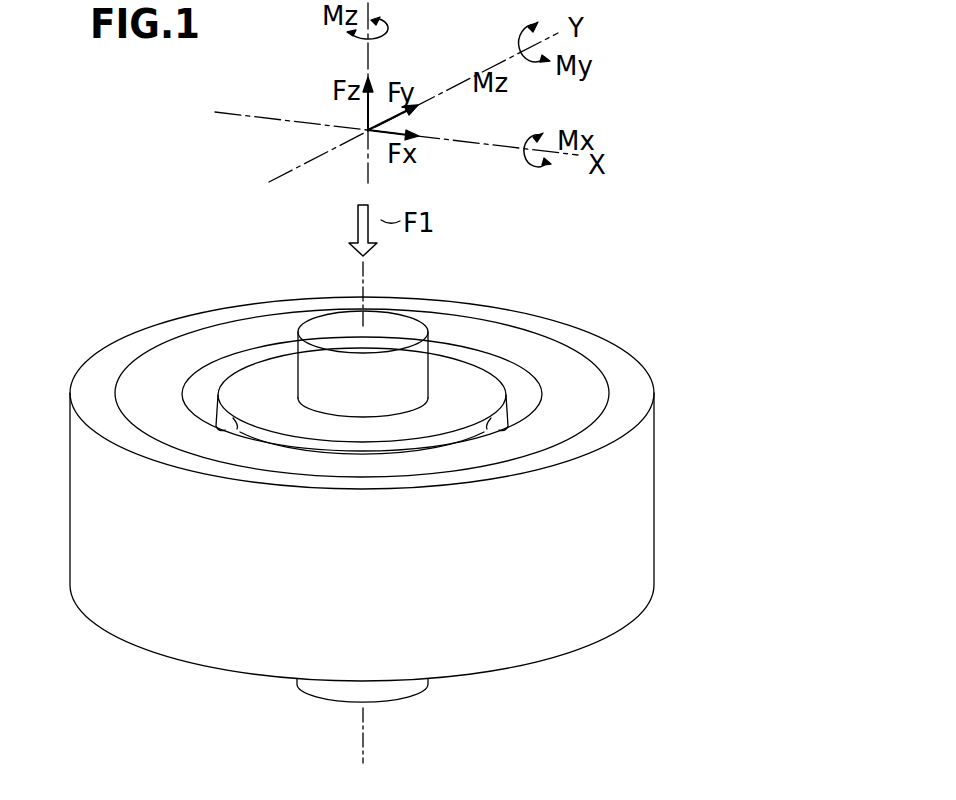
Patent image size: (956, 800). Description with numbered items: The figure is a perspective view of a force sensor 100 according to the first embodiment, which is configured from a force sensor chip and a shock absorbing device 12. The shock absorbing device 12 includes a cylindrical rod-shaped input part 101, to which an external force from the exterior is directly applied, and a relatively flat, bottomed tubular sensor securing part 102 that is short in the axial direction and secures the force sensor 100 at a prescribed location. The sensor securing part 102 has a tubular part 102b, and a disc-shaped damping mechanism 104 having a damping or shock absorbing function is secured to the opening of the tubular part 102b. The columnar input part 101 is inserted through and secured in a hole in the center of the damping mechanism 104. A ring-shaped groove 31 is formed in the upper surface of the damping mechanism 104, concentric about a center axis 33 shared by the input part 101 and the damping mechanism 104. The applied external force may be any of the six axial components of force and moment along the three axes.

The force sensor 100 is at (642, 348).
The input part 101 is at (332, 327).
The sensor securing part 102 is at (648, 492).
The tubular part 102b is at (650, 560).
The damping mechanism 104 is at (152, 382).
The shock absorbing device 12 is at (566, 388).
The ring-shaped groove 31 is at (510, 378).
The center axis 33 is at (378, 272).